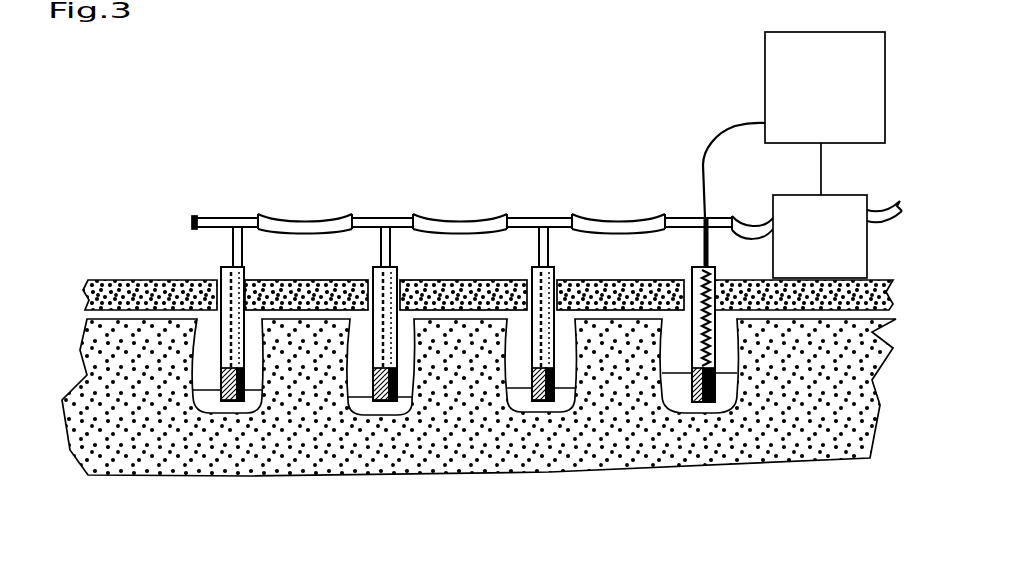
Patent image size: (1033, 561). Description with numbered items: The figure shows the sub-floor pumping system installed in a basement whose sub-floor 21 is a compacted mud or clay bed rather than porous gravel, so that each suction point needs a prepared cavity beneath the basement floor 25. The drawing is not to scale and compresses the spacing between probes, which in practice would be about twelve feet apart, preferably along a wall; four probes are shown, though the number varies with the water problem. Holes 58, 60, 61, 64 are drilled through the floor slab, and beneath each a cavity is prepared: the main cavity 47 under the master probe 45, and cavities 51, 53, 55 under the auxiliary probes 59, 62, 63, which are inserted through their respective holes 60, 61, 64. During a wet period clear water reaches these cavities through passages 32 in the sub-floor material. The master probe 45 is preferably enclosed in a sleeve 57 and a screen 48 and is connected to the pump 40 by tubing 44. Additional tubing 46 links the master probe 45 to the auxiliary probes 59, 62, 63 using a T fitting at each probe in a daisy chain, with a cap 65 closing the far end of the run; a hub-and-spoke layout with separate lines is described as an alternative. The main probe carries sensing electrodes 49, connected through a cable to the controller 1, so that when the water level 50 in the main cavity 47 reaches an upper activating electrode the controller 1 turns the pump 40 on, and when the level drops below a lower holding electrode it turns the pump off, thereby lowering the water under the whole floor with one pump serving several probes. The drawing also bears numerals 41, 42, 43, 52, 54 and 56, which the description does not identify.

The controller 1 is at (765, 64).
The sub-floor 21 is at (82, 357).
The basement floor 25 is at (112, 282).
The passages 32 is at (87, 313).
The pump 40 is at (787, 196).
The signal line 41 is at (820, 180).
The inlet pipe 42 is at (893, 203).
The cable 43 is at (703, 165).
The tubing 44 is at (750, 217).
The master probe 45 is at (712, 243).
The additional tubing 46 is at (318, 225).
The main cavity 47 is at (687, 405).
The screen 48 is at (703, 400).
The sensing electrodes 49 is at (708, 400).
The water level 50 is at (720, 378).
The cavity 51 is at (523, 400).
The cavity plate 52 is at (565, 390).
The cavity 53 is at (386, 405).
The cavity plate 54 is at (407, 400).
The cavity 55 is at (217, 405).
The cavity plate 56 is at (253, 395).
The sleeve 57 is at (691, 270).
The hole 58 is at (683, 295).
The auxiliary probe 59 is at (549, 247).
The hole 60 is at (530, 283).
The hole 61 is at (400, 281).
The auxiliary probe 62 is at (384, 247).
The auxiliary probe 63 is at (243, 250).
The hole 64 is at (222, 280).
The cap 65 is at (193, 222).